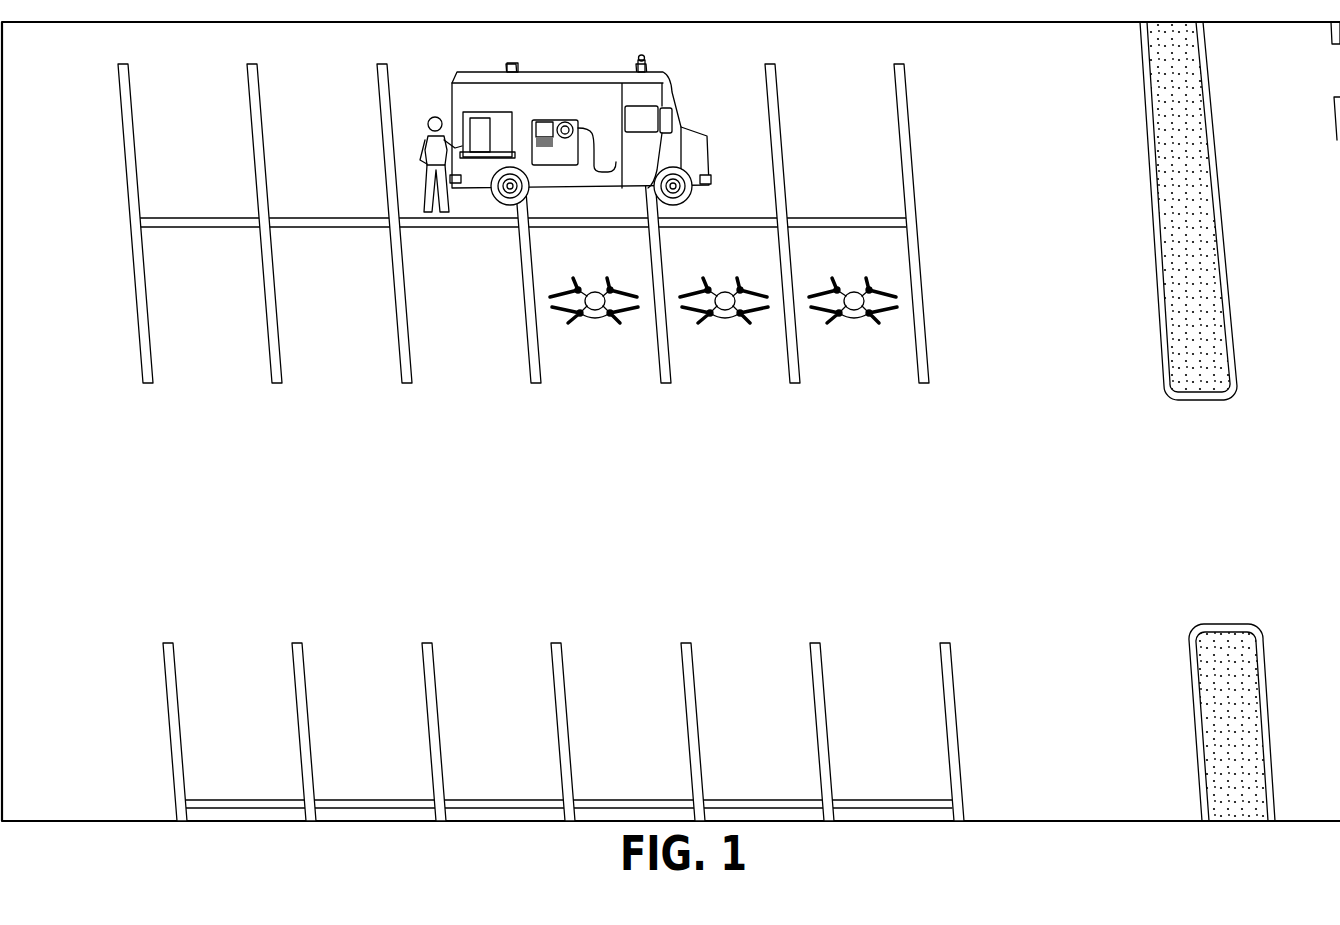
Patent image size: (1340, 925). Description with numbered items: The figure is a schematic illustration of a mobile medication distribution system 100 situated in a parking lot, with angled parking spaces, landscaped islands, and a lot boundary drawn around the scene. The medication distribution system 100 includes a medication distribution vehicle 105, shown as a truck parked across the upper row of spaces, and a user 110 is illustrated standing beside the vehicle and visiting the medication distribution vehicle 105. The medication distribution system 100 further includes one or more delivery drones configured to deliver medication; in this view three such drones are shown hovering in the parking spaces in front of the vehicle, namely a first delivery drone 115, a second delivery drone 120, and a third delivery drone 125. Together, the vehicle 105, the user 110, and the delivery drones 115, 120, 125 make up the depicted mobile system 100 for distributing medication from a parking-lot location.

The medication distribution system 100 is at (868, 126).
The medication distribution vehicle 105 is at (670, 93).
The user 110 is at (422, 140).
The first delivery drone 115 is at (600, 347).
The second delivery drone 120 is at (728, 350).
The third delivery drone 125 is at (860, 347).